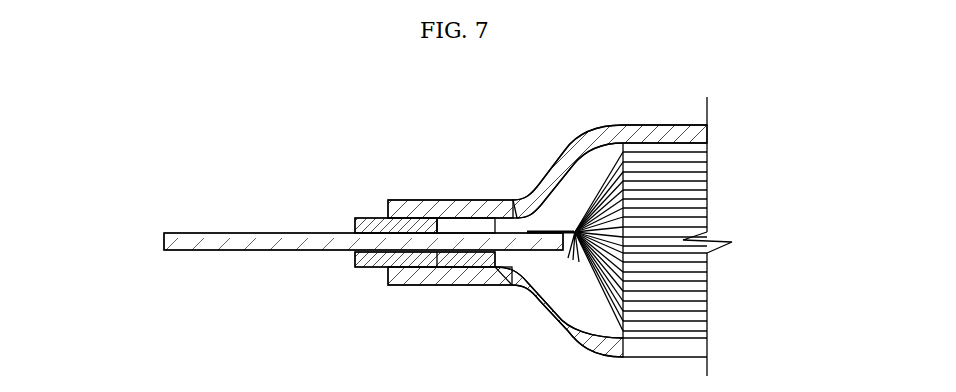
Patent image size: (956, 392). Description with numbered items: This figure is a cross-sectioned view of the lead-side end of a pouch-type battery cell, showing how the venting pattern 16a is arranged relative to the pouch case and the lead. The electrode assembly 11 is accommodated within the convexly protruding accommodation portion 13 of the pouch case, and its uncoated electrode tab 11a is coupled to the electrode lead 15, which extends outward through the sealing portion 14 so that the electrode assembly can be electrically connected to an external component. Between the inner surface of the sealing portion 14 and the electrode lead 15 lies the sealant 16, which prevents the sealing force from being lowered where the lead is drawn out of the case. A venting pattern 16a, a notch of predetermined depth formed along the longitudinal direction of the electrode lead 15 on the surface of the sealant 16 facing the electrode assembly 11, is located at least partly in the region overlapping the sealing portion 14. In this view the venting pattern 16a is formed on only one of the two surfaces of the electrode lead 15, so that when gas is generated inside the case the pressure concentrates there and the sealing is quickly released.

The electrode assembly 11 is at (594, 298).
The electrode tab 11a is at (570, 240).
The accommodation portion 13 is at (648, 124).
The sealing portion 14 is at (401, 286).
The electrode lead 15 is at (246, 240).
The sealant 16 is at (376, 258).
The venting pattern 16a is at (463, 229).